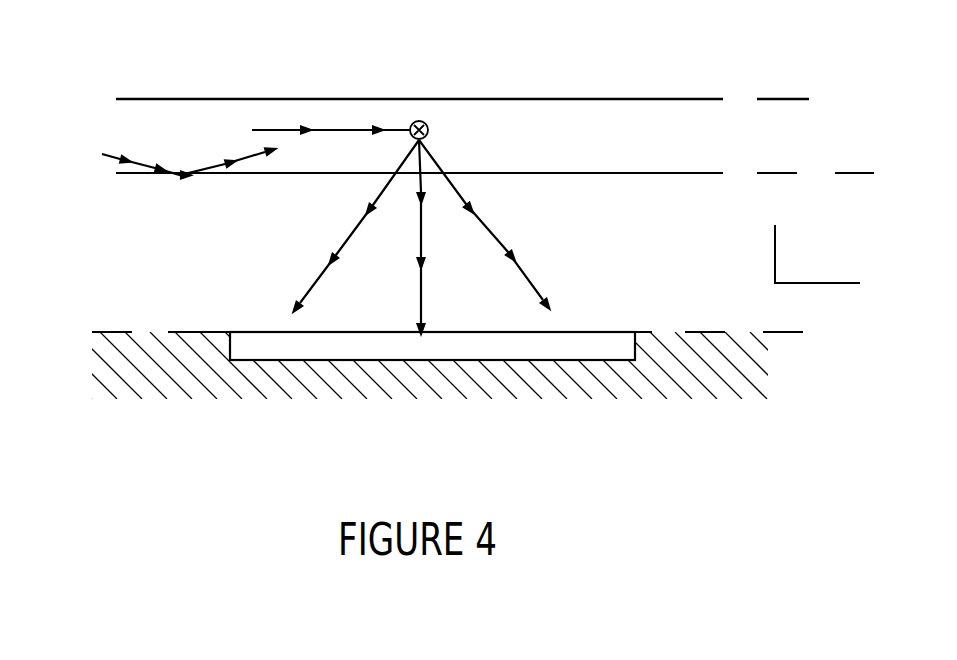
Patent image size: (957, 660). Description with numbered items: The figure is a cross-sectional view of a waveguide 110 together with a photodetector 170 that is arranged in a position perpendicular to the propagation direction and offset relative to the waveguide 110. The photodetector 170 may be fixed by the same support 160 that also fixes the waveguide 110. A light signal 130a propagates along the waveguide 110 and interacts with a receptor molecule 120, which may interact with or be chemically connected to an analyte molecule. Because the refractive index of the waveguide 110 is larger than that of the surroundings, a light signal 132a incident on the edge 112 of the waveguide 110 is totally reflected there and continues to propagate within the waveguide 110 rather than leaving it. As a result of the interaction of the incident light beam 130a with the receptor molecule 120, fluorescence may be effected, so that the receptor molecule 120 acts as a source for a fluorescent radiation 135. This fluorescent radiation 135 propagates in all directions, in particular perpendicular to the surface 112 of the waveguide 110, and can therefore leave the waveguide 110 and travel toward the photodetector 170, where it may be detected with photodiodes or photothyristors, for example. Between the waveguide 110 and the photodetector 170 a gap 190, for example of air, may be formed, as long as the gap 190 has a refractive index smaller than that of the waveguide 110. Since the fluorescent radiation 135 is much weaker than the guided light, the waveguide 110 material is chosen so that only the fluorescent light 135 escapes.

The waveguide 110 is at (593, 128).
The edge of the waveguide 112 is at (605, 176).
The receptor molecule 120 is at (428, 121).
The light signal 130a is at (328, 128).
The incident light signal 132a is at (110, 151).
The fluorescent radiation 135 is at (323, 270).
The photodetector 170 is at (522, 337).
The support 160 is at (144, 368).
The gap 190 is at (817, 254).